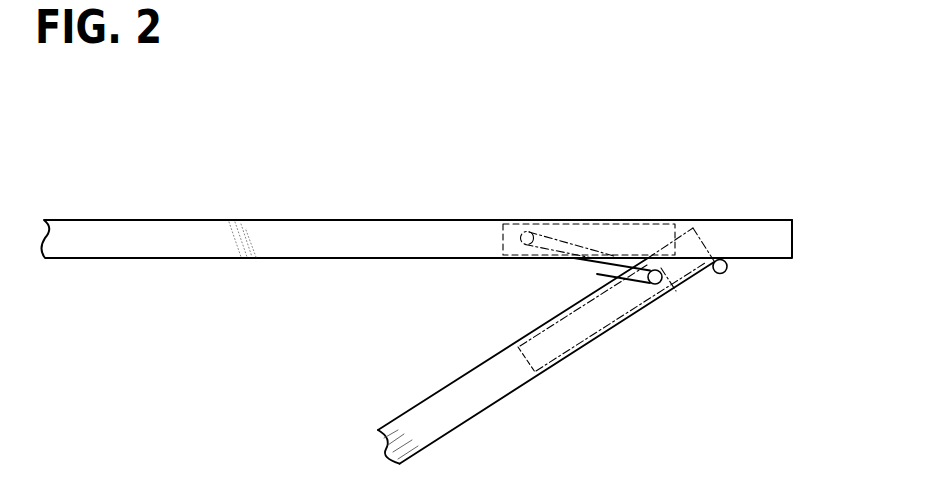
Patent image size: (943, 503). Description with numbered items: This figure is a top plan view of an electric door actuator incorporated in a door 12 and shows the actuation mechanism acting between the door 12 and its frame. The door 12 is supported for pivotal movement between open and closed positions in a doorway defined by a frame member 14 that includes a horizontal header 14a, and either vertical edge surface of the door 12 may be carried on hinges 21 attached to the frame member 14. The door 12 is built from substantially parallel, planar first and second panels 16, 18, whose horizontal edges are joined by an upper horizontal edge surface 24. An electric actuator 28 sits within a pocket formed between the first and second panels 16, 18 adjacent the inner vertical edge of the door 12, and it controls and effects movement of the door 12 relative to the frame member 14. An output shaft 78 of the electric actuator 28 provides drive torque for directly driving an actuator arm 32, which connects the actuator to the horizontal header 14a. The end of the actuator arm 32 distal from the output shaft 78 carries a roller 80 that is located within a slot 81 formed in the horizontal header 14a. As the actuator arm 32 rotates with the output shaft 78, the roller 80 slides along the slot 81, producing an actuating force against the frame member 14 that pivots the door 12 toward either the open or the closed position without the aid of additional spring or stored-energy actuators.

The door 12 is at (541, 351).
The frame member 14 is at (793, 219).
The horizontal header 14a is at (300, 219).
The first panel 16 is at (607, 334).
The second panel 18 is at (416, 407).
The hinges 21 is at (728, 266).
The upper horizontal edge surface 24 is at (488, 393).
The electric actuator 28 is at (536, 331).
The actuator arm 32 is at (604, 271).
The output shaft 78 is at (673, 284).
The roller 80 is at (528, 235).
The slot 81 is at (618, 223).